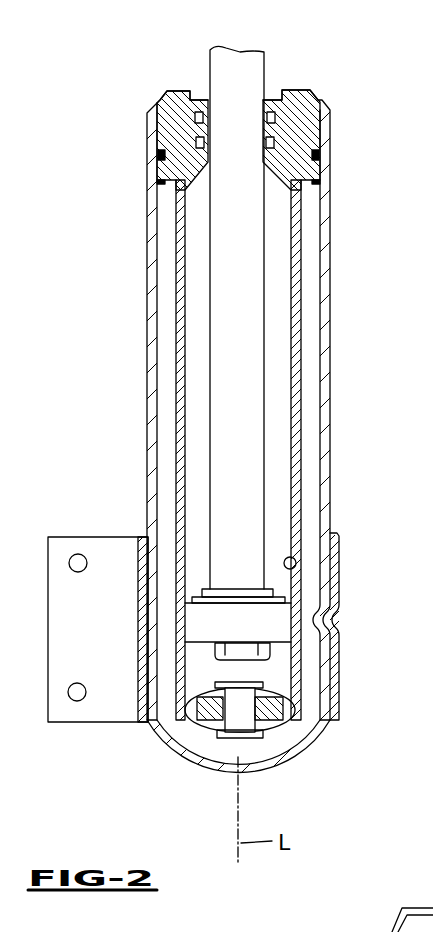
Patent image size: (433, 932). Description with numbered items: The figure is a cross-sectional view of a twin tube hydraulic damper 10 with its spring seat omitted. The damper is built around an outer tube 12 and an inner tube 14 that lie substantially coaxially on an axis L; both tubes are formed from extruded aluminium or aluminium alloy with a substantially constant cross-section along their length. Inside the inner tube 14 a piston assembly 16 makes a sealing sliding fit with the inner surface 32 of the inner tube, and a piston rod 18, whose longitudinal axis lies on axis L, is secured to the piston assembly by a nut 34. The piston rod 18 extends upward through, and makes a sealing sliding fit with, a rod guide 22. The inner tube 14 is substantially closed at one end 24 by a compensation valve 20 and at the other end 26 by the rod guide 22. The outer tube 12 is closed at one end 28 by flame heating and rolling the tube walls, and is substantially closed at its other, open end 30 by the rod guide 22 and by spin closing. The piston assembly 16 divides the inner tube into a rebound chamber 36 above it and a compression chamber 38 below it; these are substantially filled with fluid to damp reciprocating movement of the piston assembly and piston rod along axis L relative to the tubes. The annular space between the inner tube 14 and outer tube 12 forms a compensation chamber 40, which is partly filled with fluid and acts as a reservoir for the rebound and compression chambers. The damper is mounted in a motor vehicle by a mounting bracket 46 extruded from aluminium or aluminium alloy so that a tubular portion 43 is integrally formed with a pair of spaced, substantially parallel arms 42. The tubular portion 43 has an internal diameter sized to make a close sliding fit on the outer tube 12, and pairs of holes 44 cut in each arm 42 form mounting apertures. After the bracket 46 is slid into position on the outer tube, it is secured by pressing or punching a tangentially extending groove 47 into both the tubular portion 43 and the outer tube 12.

The hydraulic damper 10 is at (254, 444).
The outer tube 12 is at (330, 430).
The inner tube 14 is at (300, 384).
The piston assembly 16 is at (258, 628).
The piston rod 18 is at (250, 510).
The compensation valve 20 is at (195, 722).
The rod guide 22 is at (155, 132).
The one end of inner tube 24 is at (330, 718).
The other end of inner tube 26 is at (302, 192).
The one end of outer tube 28 is at (283, 765).
The other end of outer tube 30 is at (287, 80).
The inner surface of inner tube 32 is at (297, 557).
The nut 34 is at (270, 657).
The rebound chamber 36 is at (193, 523).
The compression chamber 38 is at (197, 670).
The compensation chamber 40 is at (170, 448).
The arms 42 is at (57, 602).
The tubular portion 43 is at (340, 694).
The holes 44 is at (78, 553).
The mounting bracket 46 is at (76, 663).
The groove 47 is at (340, 625).